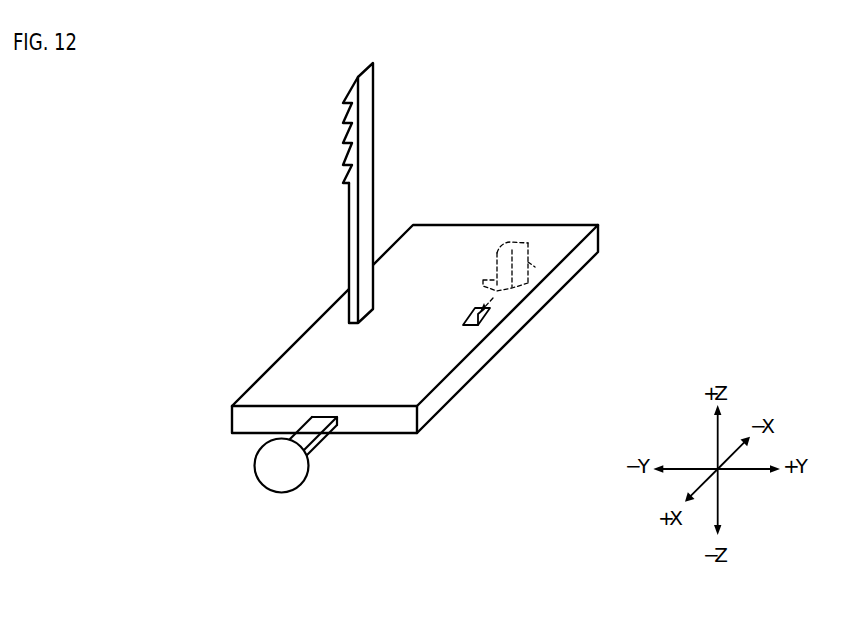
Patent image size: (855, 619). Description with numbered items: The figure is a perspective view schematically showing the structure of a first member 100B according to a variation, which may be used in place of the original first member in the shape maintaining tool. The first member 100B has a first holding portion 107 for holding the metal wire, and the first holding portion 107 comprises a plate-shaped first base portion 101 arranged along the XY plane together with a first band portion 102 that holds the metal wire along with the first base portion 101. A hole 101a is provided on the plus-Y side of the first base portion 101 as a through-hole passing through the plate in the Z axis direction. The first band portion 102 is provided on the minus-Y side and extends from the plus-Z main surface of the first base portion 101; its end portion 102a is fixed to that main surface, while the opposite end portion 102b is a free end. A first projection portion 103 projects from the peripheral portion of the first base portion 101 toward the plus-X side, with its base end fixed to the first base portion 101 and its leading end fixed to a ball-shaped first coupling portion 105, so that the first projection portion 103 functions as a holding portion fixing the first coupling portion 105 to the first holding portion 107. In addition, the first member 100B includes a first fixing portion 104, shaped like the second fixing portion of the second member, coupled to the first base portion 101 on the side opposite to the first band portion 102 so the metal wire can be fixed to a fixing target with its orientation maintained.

The first member 100B is at (617, 140).
The first holding portion 107 is at (192, 195).
The first base portion 101 is at (286, 352).
The hole 101a is at (497, 305).
The first band portion 102 is at (247, 155).
The end portion 102a is at (350, 302).
The end portion 102b is at (346, 108).
The first projection portion 103 is at (325, 442).
The first fixing portion 104 is at (560, 272).
The first coupling portion 105 is at (305, 480).